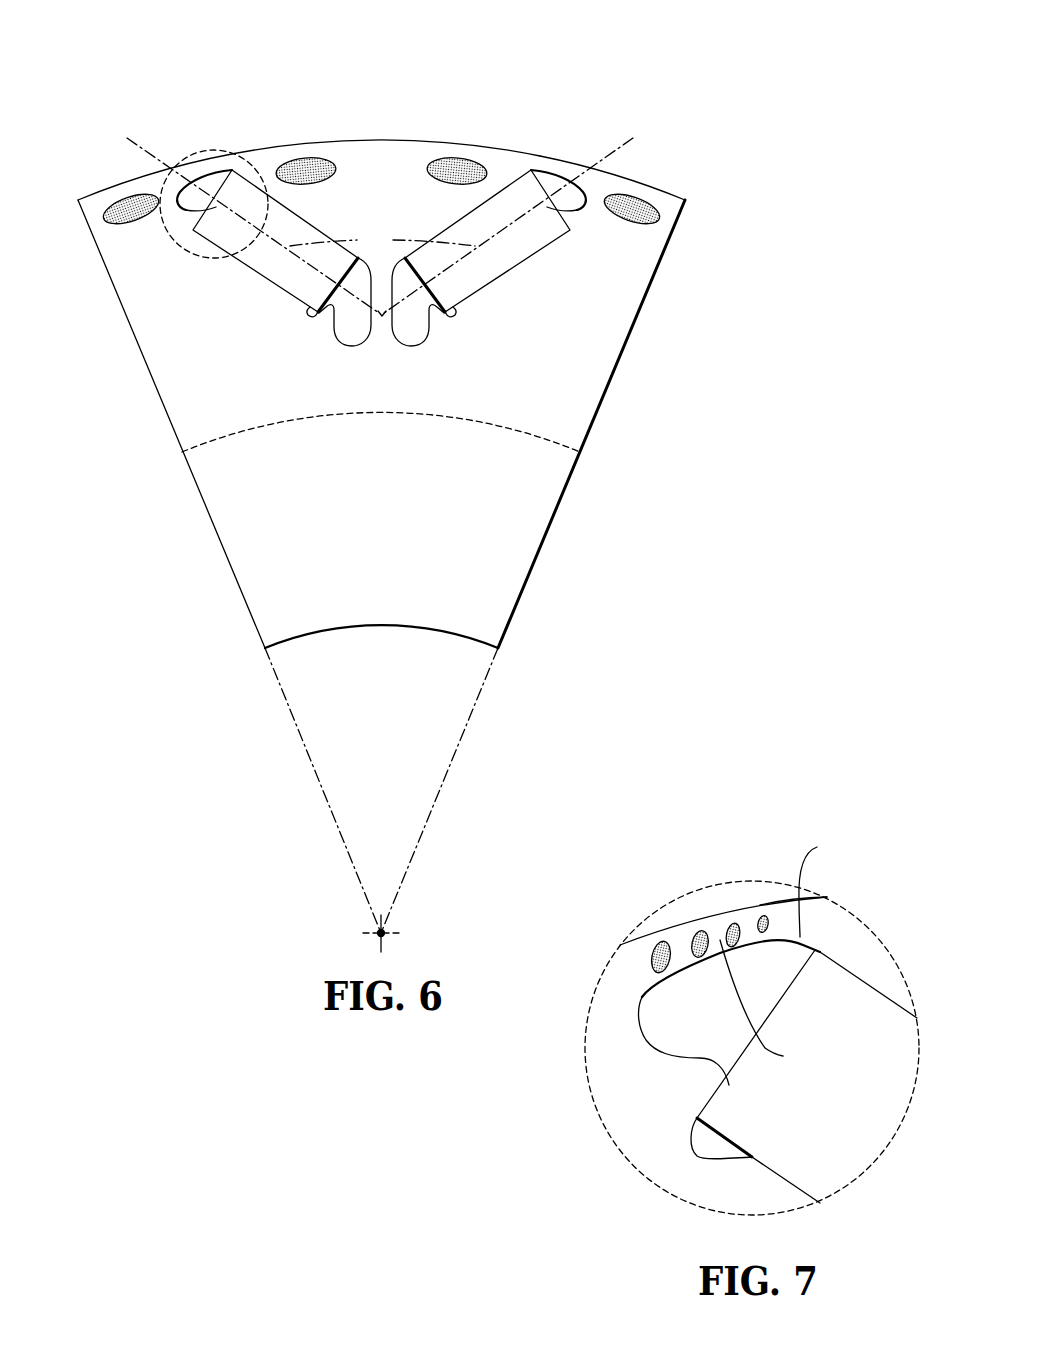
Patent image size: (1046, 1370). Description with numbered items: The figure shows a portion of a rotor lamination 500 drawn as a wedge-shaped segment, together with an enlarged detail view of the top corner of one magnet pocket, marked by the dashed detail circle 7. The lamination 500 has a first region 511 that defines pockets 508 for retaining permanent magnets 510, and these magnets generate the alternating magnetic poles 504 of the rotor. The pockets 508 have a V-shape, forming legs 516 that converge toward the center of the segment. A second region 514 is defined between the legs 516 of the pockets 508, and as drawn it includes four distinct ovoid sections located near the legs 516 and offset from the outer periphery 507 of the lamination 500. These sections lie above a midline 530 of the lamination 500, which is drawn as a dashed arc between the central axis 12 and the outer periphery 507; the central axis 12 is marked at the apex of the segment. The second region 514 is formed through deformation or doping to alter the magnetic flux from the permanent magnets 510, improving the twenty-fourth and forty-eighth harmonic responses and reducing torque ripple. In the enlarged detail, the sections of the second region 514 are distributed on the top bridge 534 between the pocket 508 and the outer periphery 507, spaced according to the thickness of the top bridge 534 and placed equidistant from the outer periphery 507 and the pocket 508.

In FIG. 6, the rotor lamination 500 is at (476, 66).
In FIG. 7, the rotor lamination 500 is at (696, 843).
In FIG. 6, the alternating magnetic poles 504 is at (385, 136).
In FIG. 6, the outer periphery 507 is at (555, 157).
In FIG. 7, the outer periphery 507 is at (790, 903).
In FIG. 6, the pockets 508 is at (216, 208).
In FIG. 7, the pockets 508 is at (665, 1020).
In FIG. 6, the permanent magnets 510 is at (265, 253).
In FIG. 7, the permanent magnets 510 is at (860, 1020).
In FIG. 6, the first region 511 is at (258, 540).
In FIG. 7, the first region 511 is at (845, 945).
In FIG. 6, the second region 514 is at (130, 207).
In FIG. 7, the second region 514 is at (762, 916).
In FIG. 6, the legs 516 is at (396, 238).
In FIG. 6, the midline 530 is at (363, 413).
In FIG. 7, the top bridge 534 is at (768, 1004).
In FIG. 6, the central axis 12 is at (397, 917).
In FIG. 6, the detail view circle for FIG. 7 is at (211, 150).